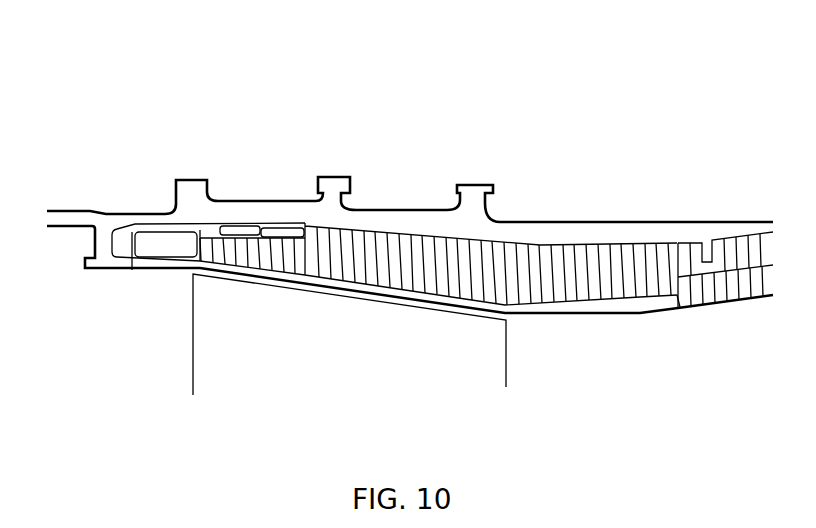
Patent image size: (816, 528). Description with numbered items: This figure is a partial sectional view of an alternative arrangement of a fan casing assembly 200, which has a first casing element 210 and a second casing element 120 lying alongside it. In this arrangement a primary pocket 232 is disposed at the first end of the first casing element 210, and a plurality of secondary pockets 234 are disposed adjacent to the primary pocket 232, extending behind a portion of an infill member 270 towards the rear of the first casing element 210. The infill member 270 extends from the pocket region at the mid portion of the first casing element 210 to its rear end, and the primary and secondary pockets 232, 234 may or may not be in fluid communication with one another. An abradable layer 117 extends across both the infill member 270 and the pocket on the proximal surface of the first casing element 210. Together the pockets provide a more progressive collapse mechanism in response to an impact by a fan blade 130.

The fan casing assembly 200 is at (527, 102).
The second casing element 120 is at (577, 235).
The primary pocket 232 is at (153, 243).
The secondary pockets 234 is at (297, 230).
The infill member 270 is at (538, 294).
The first casing element 210 is at (620, 317).
The abradable layer 117 is at (665, 312).
The fan blade 130 is at (381, 389).